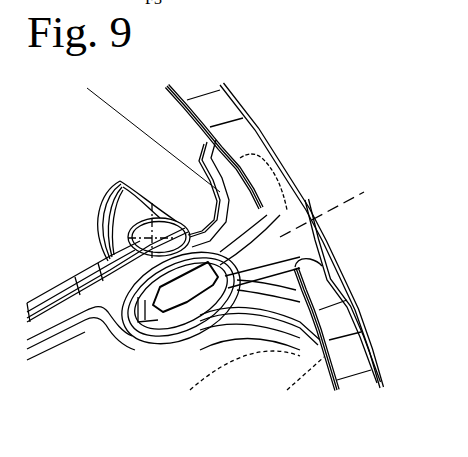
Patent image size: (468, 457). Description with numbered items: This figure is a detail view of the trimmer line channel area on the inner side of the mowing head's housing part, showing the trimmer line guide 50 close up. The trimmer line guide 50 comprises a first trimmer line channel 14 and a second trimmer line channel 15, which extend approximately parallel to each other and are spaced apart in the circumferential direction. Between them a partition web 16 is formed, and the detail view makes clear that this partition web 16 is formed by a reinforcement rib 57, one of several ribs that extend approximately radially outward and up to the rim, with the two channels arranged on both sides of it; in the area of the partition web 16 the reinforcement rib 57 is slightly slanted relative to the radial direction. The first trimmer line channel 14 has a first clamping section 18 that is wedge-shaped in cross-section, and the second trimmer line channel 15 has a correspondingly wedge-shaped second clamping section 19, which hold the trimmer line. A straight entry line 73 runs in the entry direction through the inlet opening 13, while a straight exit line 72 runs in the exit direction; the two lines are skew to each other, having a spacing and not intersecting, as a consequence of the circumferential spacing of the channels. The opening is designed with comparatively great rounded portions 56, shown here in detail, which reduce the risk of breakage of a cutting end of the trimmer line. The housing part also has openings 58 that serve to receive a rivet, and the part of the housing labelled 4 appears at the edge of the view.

The inlet opening 13 is at (326, 230).
The first trimmer line channel 14 is at (242, 258).
The second trimmer line channel 15 is at (150, 221).
The partition web 16 is at (172, 262).
The first clamping section 18 is at (198, 294).
The second clamping section 19 is at (168, 214).
The trimmer line guide 50 is at (157, 311).
The rounded portions 56 is at (255, 193).
The reinforcement rib 57 is at (60, 318).
The straight exit line 72 is at (152, 222).
The straight entry line 73 is at (341, 200).
The frame 4 is at (5, 189).
The openings 58 is at (10, 219).